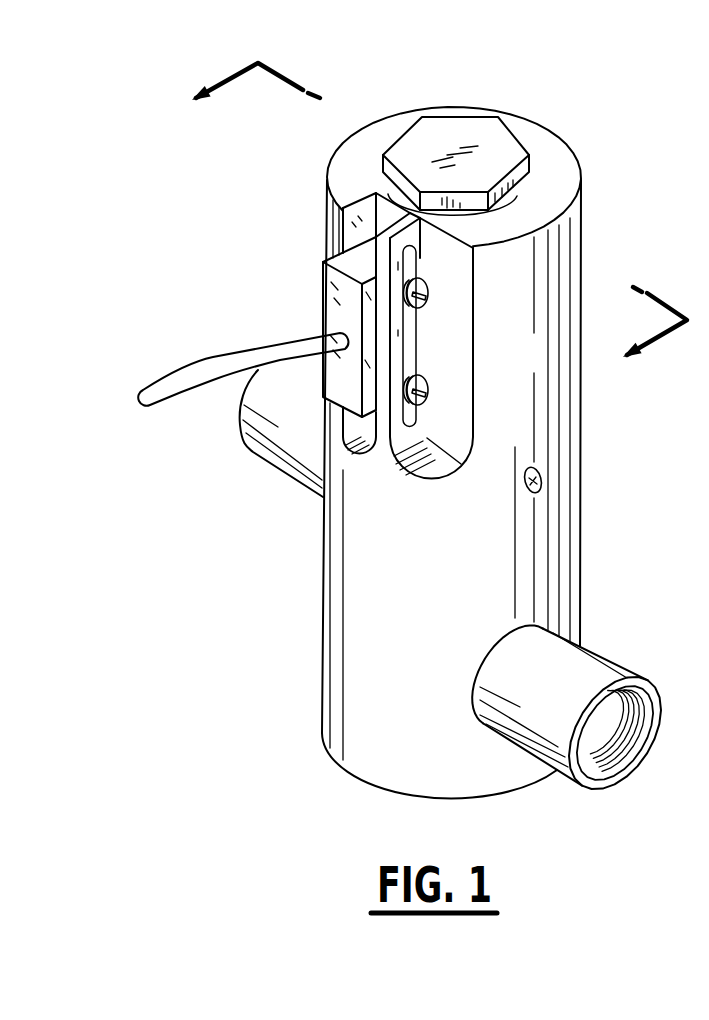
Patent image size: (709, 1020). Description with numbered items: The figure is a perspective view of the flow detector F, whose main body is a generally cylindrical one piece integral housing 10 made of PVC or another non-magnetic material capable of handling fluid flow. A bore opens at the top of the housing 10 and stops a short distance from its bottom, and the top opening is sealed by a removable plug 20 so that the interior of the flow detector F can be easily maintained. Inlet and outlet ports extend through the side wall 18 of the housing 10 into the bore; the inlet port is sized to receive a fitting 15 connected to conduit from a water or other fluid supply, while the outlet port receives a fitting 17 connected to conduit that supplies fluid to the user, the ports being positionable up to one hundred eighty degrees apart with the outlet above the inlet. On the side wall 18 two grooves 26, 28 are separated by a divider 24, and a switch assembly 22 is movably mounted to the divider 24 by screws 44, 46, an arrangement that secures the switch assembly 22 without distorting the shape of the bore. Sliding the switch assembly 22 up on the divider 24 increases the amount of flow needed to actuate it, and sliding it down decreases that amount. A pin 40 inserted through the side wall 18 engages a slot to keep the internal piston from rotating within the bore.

The flow detector F is at (604, 120).
The housing 10 is at (585, 221).
The fitting 15 is at (616, 653).
The fitting 17 is at (248, 456).
The side wall 18 is at (576, 420).
The removable plug 20 is at (509, 130).
The switch assembly 22 is at (316, 276).
The divider 24 is at (360, 448).
The groove 26 is at (358, 203).
The groove 28 is at (455, 348).
The pin 40 is at (545, 478).
The screw 44 is at (430, 286).
The screw 46 is at (430, 386).